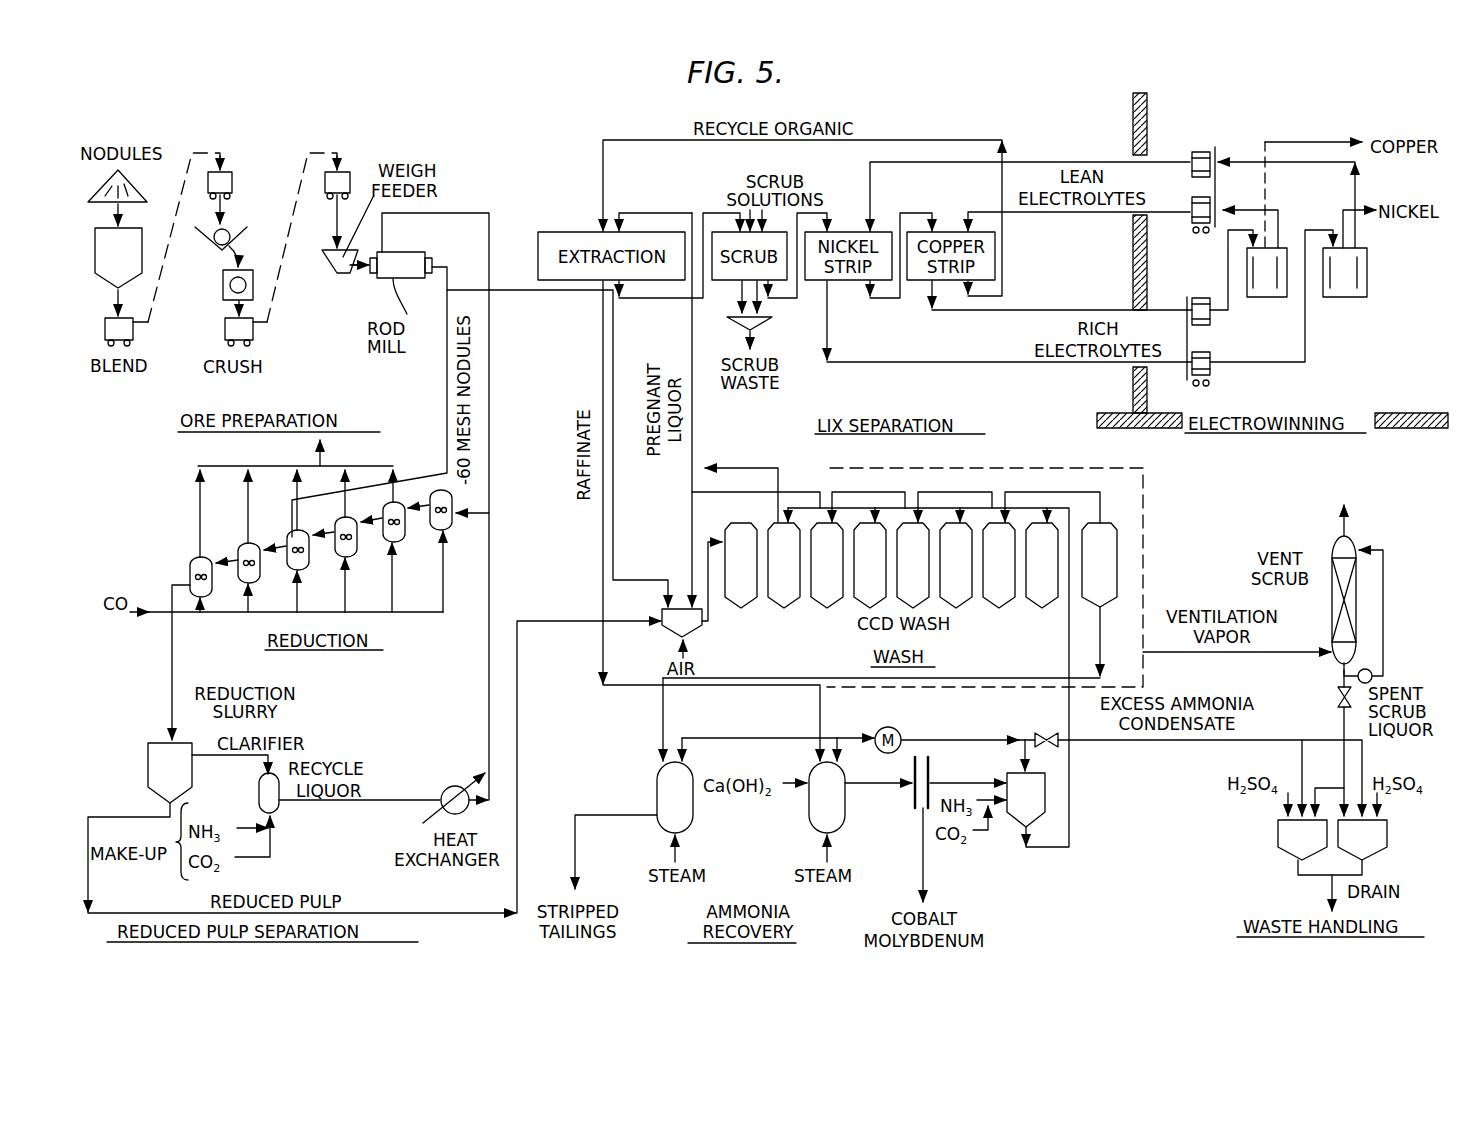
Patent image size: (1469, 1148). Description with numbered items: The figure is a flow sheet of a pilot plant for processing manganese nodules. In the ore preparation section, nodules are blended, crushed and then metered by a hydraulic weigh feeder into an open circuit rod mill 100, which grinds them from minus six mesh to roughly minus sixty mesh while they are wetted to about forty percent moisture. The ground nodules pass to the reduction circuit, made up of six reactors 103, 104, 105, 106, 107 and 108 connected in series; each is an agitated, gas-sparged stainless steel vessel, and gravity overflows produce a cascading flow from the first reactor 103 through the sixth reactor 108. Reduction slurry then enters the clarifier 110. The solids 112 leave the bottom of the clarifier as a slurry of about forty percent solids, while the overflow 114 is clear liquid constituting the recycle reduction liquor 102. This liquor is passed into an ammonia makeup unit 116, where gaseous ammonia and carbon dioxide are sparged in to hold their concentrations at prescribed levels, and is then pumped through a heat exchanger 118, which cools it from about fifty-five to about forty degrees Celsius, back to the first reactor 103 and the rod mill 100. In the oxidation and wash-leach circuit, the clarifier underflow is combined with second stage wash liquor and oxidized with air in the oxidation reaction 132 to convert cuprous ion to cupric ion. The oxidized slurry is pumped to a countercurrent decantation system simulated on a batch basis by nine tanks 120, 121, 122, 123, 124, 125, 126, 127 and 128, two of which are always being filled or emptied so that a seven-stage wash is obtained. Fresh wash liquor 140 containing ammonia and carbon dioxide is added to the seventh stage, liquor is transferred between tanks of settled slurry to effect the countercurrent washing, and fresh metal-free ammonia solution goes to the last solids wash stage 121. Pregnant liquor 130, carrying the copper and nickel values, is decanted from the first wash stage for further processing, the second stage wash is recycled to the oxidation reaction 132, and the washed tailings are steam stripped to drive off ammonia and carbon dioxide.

The rod mill 100 is at (403, 253).
The recycle reduction liquor 102 is at (489, 228).
The first reactor 103 is at (453, 523).
The reactor 104 is at (405, 535).
The reactor 105 is at (357, 547).
The reactor 106 is at (310, 560).
The reactor 107 is at (260, 573).
The sixth reactor 108 is at (213, 600).
The clarifier 110 is at (148, 752).
The solids 112 is at (127, 817).
The overflow 114 is at (203, 755).
The ammonia makeup unit 116 is at (278, 813).
The heat exchanger 118 is at (448, 788).
The tank 120 is at (735, 610).
The last solids wash stage 121 is at (777, 610).
The tank 122 is at (822, 608).
The tank 123 is at (865, 522).
The tank 124 is at (927, 522).
The tank 125 is at (973, 522).
The tank 126 is at (1003, 608).
The tank 127 is at (1048, 603).
The tank 128 is at (1117, 565).
The pregnant liquor 130 is at (718, 467).
The oxidation reaction 132 is at (670, 635).
The fresh wash liquor 140 is at (1047, 850).